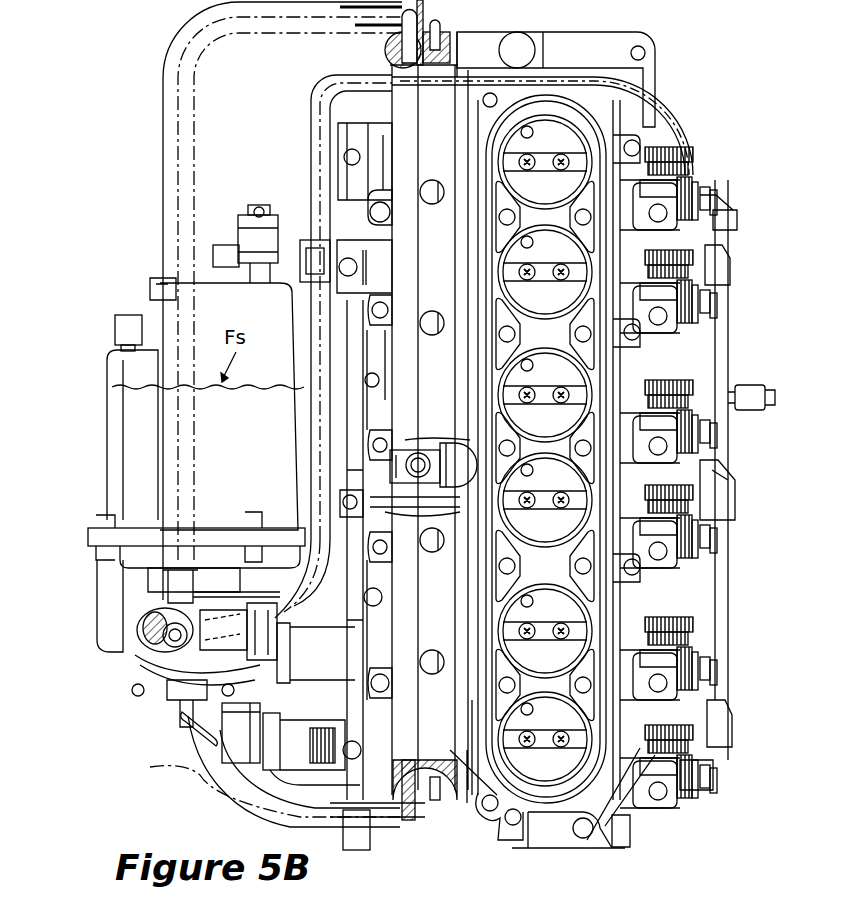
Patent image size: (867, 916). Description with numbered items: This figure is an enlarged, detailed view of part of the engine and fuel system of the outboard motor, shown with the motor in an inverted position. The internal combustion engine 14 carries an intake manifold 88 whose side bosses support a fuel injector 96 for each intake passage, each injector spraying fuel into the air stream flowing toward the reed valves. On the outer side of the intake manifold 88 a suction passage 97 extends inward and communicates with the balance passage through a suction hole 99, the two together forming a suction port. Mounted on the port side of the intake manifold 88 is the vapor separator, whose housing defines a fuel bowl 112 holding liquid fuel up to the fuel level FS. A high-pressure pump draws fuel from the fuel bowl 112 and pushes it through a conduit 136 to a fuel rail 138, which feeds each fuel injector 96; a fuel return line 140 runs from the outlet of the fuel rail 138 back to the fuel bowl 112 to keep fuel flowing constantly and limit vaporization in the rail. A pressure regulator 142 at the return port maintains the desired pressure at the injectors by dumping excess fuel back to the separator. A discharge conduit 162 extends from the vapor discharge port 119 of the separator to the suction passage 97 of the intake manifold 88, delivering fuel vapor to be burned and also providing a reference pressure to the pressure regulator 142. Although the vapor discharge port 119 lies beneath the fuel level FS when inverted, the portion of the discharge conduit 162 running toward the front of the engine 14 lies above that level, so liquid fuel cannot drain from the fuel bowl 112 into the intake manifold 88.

The internal combustion engine 14 is at (735, 494).
The intake manifold 88 is at (606, 117).
The fuel injector 96 is at (443, 447).
The suction passage 97 is at (710, 252).
The suction hole 99 is at (620, 232).
The fuel bowl 112 is at (137, 444).
The vapor discharge port 119 is at (162, 655).
The conduit 136 is at (196, 128).
The fuel rail 138 is at (392, 42).
The fuel return line 140 is at (255, 771).
The pressure regulator 142 is at (182, 712).
The discharge conduit 162 is at (310, 138).